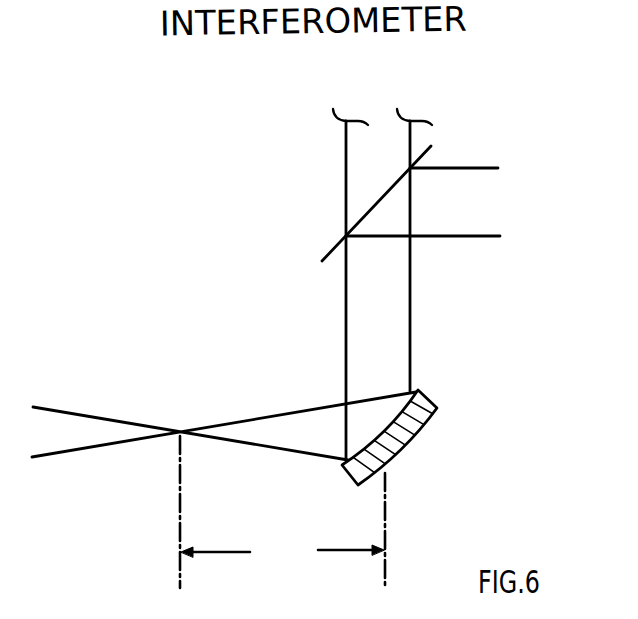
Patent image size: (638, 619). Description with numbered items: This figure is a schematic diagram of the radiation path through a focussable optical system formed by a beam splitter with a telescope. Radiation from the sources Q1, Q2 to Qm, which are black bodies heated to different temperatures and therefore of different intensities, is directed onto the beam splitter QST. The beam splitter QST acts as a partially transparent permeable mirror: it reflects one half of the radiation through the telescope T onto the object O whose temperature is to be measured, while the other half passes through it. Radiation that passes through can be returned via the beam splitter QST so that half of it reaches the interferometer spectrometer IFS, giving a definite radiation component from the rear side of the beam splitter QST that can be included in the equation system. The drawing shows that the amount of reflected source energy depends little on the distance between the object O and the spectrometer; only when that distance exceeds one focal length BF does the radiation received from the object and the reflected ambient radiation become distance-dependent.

The interferometer spectrometer IFS is at (382, 262).
The beam splitter QST is at (326, 258).
The radiation source Q1 is at (495, 184).
The radiation source Q2 is at (547, 204).
The radiation source Qm is at (497, 252).
The telescope T is at (423, 423).
The focal length BF is at (282, 512).
The object O is at (224, 412).